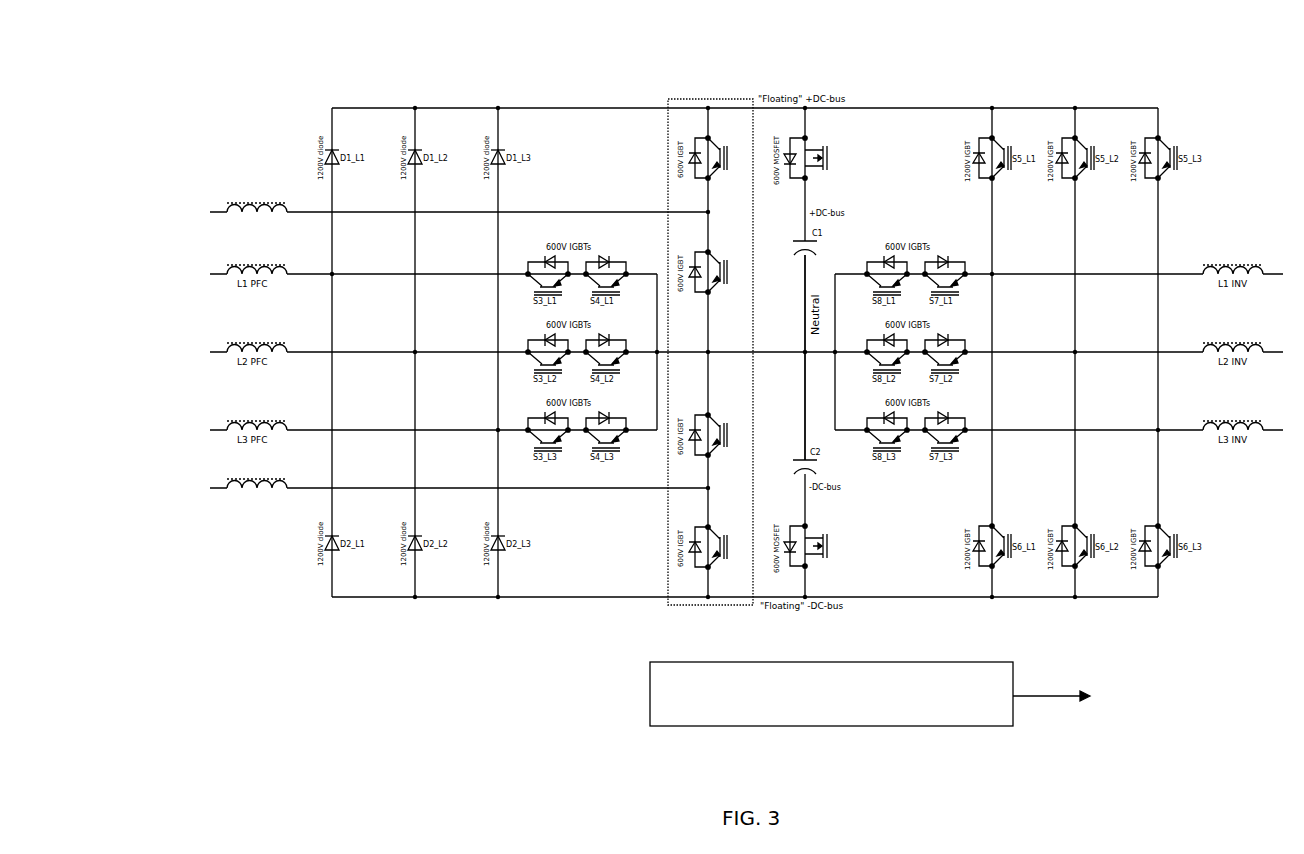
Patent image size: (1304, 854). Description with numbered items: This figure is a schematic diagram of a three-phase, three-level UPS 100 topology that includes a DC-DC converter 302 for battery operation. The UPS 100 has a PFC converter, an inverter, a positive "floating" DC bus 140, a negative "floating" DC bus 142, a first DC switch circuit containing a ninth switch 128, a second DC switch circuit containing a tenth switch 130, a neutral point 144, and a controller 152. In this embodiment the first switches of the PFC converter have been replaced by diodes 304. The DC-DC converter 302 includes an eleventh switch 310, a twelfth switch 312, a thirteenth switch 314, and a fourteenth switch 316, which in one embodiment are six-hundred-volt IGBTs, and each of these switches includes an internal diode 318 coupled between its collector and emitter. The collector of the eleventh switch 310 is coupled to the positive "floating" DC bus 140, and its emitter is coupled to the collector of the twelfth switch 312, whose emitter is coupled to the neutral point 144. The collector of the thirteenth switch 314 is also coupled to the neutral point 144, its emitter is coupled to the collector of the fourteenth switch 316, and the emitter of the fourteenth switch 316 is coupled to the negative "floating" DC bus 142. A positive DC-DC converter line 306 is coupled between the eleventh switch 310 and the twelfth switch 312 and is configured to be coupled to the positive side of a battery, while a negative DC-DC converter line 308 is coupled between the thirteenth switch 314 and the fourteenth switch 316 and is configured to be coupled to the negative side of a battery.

The UPS 100 is at (349, 86).
The positive "floating" DC bus 140 is at (628, 107).
The negative "floating" DC bus 142 is at (643, 598).
The DC-DC converter 302 is at (693, 98).
The diodes 304 is at (336, 164).
The positive DC-DC converter line 306 is at (222, 211).
The negative DC-DC converter line 308 is at (218, 488).
The eleventh switch 310 is at (725, 168).
The twelfth switch 312 is at (725, 283).
The thirteenth switch 314 is at (725, 445).
The fourteenth switch 316 is at (725, 557).
The internal diode 318 is at (695, 170).
The ninth switch 128 is at (830, 158).
The tenth switch 130 is at (828, 559).
The neutral point 144 is at (803, 350).
The controller 152 is at (968, 680).